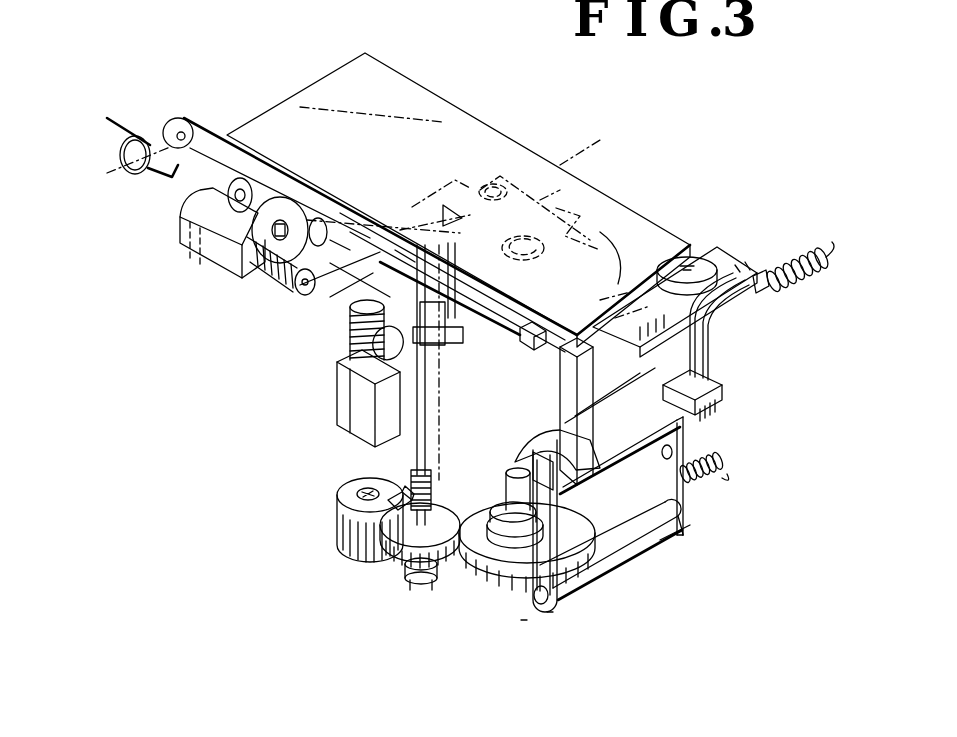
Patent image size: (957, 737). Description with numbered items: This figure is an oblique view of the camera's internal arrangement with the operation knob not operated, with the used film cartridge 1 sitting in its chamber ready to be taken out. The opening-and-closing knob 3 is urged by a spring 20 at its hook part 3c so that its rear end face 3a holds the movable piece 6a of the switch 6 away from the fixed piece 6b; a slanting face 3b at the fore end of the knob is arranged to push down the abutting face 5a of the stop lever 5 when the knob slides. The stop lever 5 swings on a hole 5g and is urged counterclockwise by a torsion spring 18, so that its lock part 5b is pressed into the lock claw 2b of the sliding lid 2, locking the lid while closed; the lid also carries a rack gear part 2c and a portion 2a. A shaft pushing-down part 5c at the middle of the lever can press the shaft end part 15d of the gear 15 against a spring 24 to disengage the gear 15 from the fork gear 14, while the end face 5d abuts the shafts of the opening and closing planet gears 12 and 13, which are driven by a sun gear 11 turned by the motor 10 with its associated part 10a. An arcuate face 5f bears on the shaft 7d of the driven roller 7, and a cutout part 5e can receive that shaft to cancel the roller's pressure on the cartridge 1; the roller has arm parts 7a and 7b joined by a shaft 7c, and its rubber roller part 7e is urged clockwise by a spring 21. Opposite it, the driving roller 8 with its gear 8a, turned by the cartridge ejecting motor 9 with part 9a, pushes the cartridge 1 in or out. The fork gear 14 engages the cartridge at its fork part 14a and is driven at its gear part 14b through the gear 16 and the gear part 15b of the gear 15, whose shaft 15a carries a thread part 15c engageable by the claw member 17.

The film cartridge 1 is at (538, 198).
The sliding lid 2 is at (418, 104).
The plate portion 2a is at (614, 400).
The lock claw 2b is at (590, 243).
The rack gear part 2c is at (325, 292).
The opening-and-closing knob 3 is at (668, 250).
The rear end face 3a is at (728, 252).
The slanting face 3b is at (690, 520).
The hook part 3c is at (770, 288).
The stop lever 5 is at (207, 138).
The abutting face 5a is at (640, 400).
The lock part 5b is at (527, 335).
The shaft pushing-down part 5c is at (330, 330).
The end face 5d is at (283, 190).
The cutout part 5e is at (615, 410).
The arcuate face 5f is at (557, 600).
The hole 5g is at (176, 120).
The switch 6 is at (724, 390).
The movable piece 6a is at (737, 300).
The fixed piece 6b is at (720, 340).
The driven roller 7 is at (692, 438).
The arm part 7a is at (547, 612).
The arm part 7b is at (700, 498).
The shaft 7c is at (590, 413).
The shaft 7d is at (521, 625).
The roller part 7e is at (688, 415).
The driving roller 8 is at (465, 242).
The gear 8a is at (398, 250).
The cartridge ejecting motor 9 is at (350, 420).
The screw 9a is at (345, 362).
The motor 10 is at (193, 252).
The worm gear 10a is at (275, 280).
The sun gear 11 is at (306, 200).
The planet gear 12 is at (252, 192).
The planet gear 13 is at (338, 245).
The fork gear 14 is at (505, 582).
The fork part 14a is at (500, 575).
The gear part 14b is at (512, 605).
The gear 15 is at (395, 540).
The shaft 15a is at (400, 458).
The gear part 15b is at (395, 590).
The thread part 15c is at (440, 590).
The shaft end part 15d is at (432, 250).
The gear 16 is at (336, 522).
The claw member 17 is at (368, 530).
The torsion spring 18 is at (135, 178).
The spring 20 is at (791, 250).
The spring 21 is at (735, 478).
The spring 24 is at (400, 620).